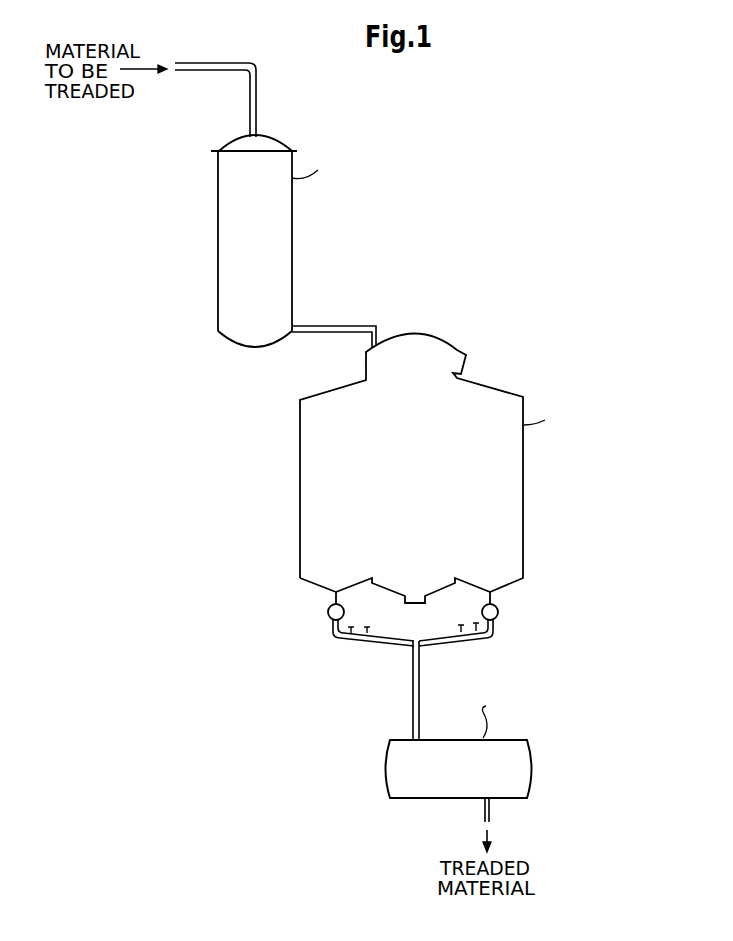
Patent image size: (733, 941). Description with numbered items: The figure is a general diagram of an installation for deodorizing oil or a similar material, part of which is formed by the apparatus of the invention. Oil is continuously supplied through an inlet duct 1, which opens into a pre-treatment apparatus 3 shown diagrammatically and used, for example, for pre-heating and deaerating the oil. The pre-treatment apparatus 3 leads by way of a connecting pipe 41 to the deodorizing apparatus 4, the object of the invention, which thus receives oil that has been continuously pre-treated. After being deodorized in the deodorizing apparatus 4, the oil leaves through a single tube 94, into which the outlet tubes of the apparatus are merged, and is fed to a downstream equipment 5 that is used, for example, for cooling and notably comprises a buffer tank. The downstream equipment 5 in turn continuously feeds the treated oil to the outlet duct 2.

The inlet duct 1 is at (202, 63).
The pre-treatment apparatus 3 is at (292, 237).
The connecting pipe 41 is at (346, 324).
The deodorizing apparatus 4 is at (524, 470).
The single tube 94 is at (419, 670).
The downstream equipment 5 is at (534, 762).
The outlet duct 2 is at (490, 815).